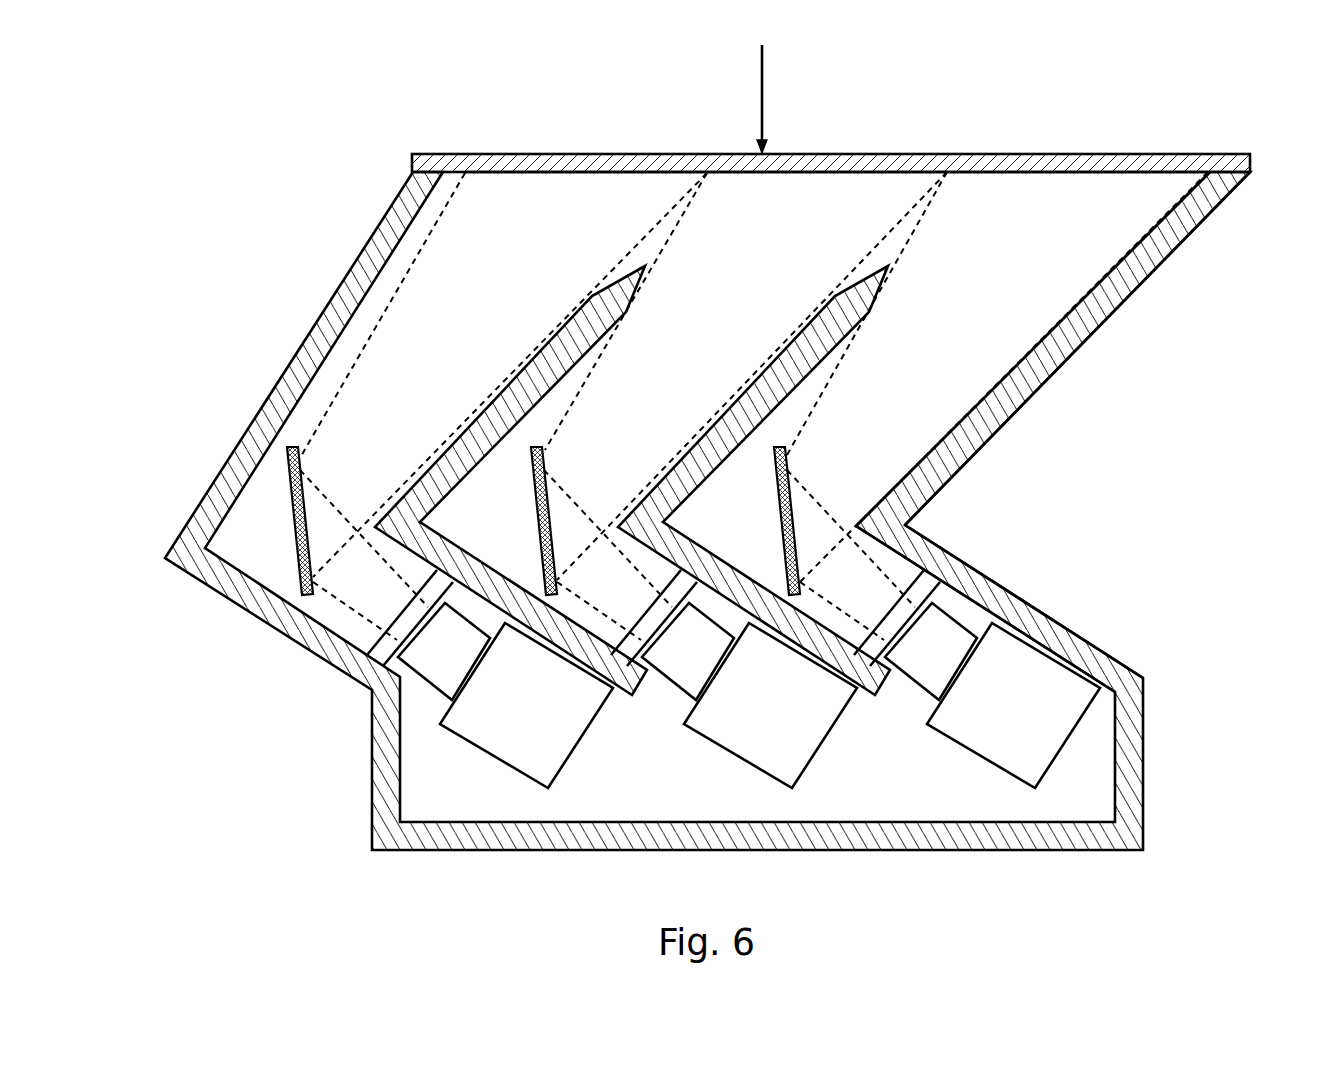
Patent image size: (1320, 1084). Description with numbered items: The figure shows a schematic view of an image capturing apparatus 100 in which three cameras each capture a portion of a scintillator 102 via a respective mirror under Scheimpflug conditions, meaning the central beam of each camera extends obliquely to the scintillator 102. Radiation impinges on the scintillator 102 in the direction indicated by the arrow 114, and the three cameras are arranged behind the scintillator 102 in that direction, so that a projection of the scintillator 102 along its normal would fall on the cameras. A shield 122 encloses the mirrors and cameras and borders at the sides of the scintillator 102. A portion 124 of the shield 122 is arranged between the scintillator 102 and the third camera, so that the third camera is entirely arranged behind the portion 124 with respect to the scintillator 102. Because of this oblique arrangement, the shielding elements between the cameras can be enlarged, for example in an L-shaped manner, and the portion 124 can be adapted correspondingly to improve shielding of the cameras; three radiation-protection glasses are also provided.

The image capturing apparatus 100 is at (1280, 79).
The scintillator 102 is at (512, 152).
The arrow 114 is at (762, 95).
The shield 122 is at (1126, 297).
The portion of the shield 124 is at (1050, 594).